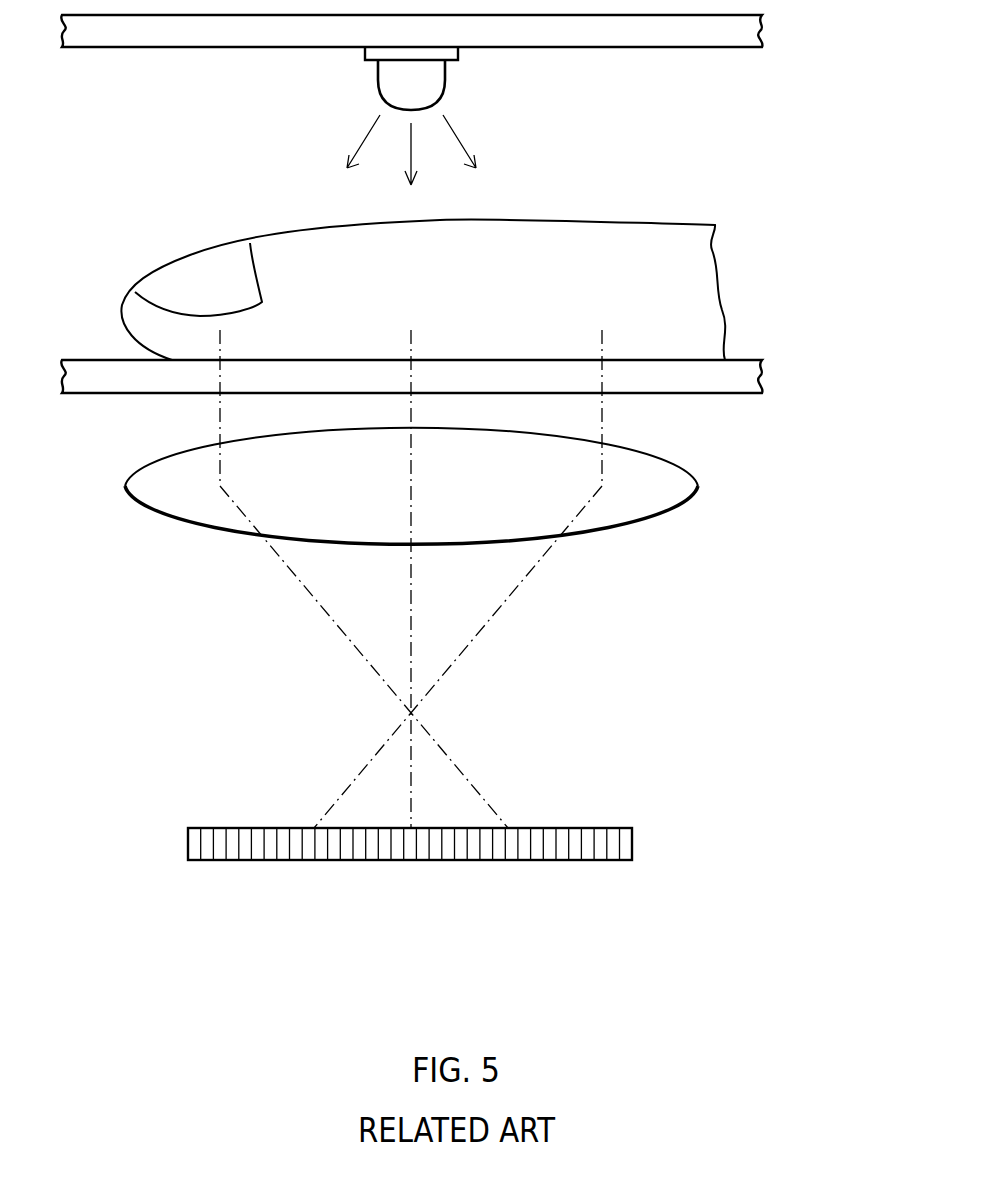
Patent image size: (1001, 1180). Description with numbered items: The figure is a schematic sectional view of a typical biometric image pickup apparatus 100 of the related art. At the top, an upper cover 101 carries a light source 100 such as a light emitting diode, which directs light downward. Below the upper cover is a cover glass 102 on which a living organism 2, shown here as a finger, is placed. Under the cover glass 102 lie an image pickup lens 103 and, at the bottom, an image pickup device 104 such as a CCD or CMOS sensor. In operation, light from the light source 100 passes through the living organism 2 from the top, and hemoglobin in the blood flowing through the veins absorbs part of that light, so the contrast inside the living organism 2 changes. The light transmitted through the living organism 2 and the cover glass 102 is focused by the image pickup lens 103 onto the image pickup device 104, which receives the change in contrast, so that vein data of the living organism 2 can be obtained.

The living organism 2 is at (655, 230).
The light source 100 is at (433, 77).
The upper cover 101 is at (750, 30).
The cover glass 102 is at (748, 377).
The image pickup lens 103 is at (688, 485).
The image pickup device 104 is at (625, 843).